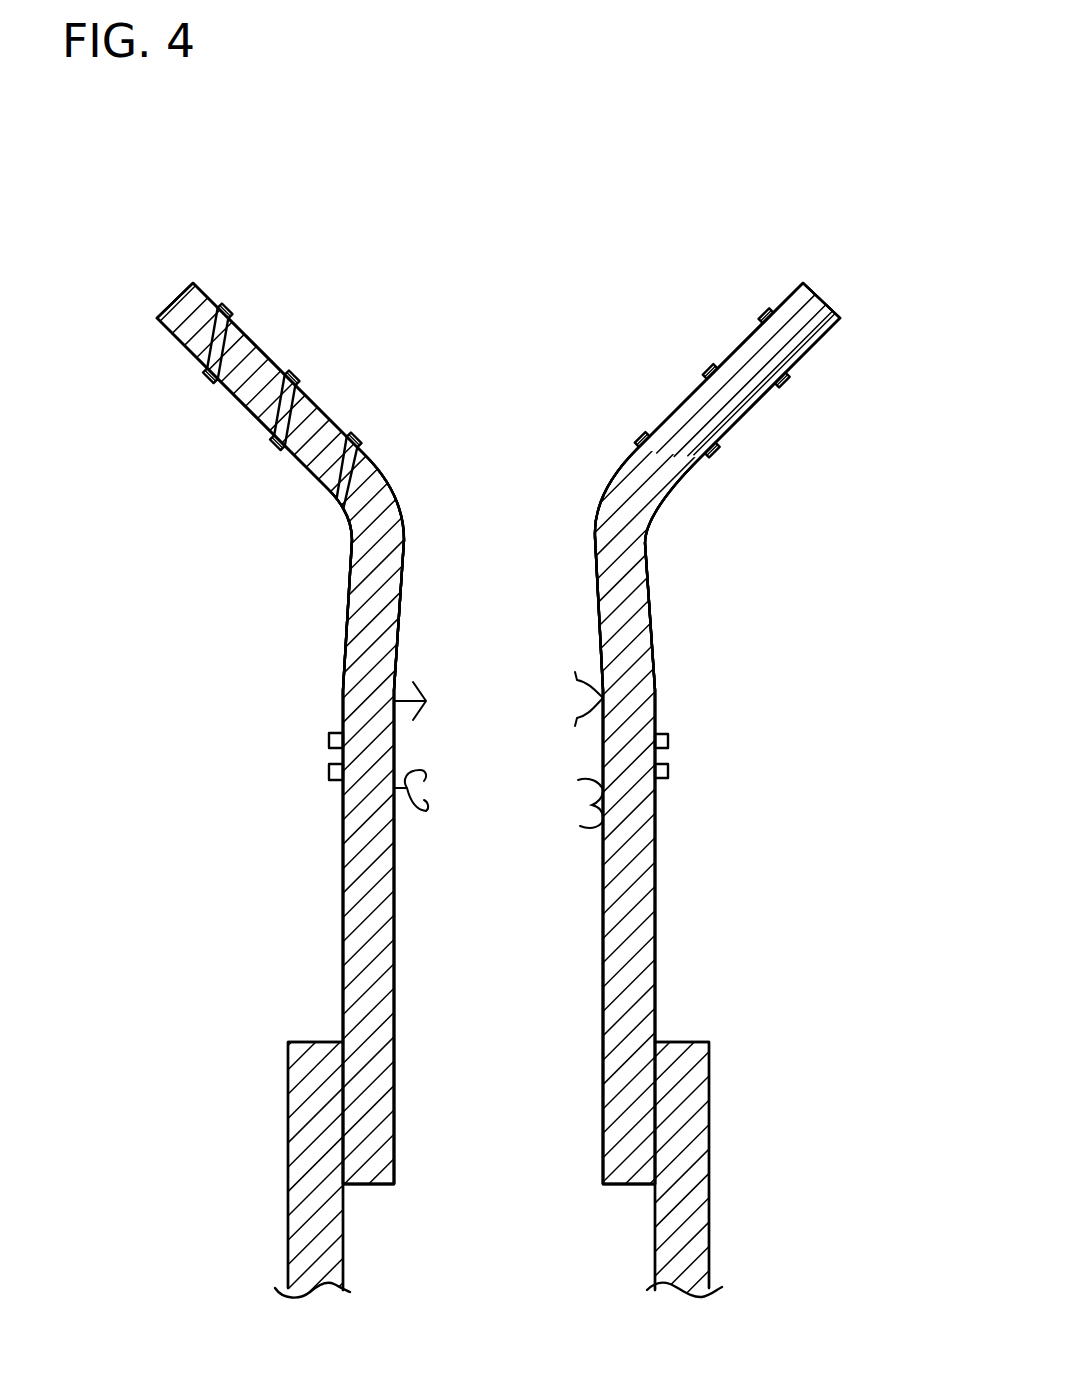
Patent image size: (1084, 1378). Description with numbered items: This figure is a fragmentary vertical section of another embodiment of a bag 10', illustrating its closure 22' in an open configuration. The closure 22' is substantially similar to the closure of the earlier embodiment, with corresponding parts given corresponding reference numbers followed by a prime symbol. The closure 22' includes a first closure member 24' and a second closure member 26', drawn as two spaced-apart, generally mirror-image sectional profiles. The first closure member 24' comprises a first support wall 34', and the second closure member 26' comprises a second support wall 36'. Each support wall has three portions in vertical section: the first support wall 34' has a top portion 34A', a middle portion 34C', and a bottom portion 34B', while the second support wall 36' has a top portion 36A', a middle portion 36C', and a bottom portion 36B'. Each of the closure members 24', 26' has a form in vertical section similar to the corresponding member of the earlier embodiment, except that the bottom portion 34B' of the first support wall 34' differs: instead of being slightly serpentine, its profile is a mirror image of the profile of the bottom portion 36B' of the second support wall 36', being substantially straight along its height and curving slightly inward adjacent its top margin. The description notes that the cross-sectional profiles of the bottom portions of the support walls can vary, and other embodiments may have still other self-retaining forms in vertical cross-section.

The valve assembly 10' is at (487, 811).
The closure 22' is at (498, 663).
The first closure member 24' is at (309, 733).
The second closure member 26' is at (677, 733).
The first support wall 34' is at (280, 790).
The top portion of first support wall 34A' is at (202, 395).
The bottom portion of first support wall 34B' is at (245, 932).
The middle portion of first support wall 34C' is at (251, 592).
The second support wall 36' is at (717, 790).
The top portion of second support wall 36A' is at (797, 384).
The bottom portion of second support wall 36B' is at (757, 931).
The middle portion of second support wall 36C' is at (752, 592).